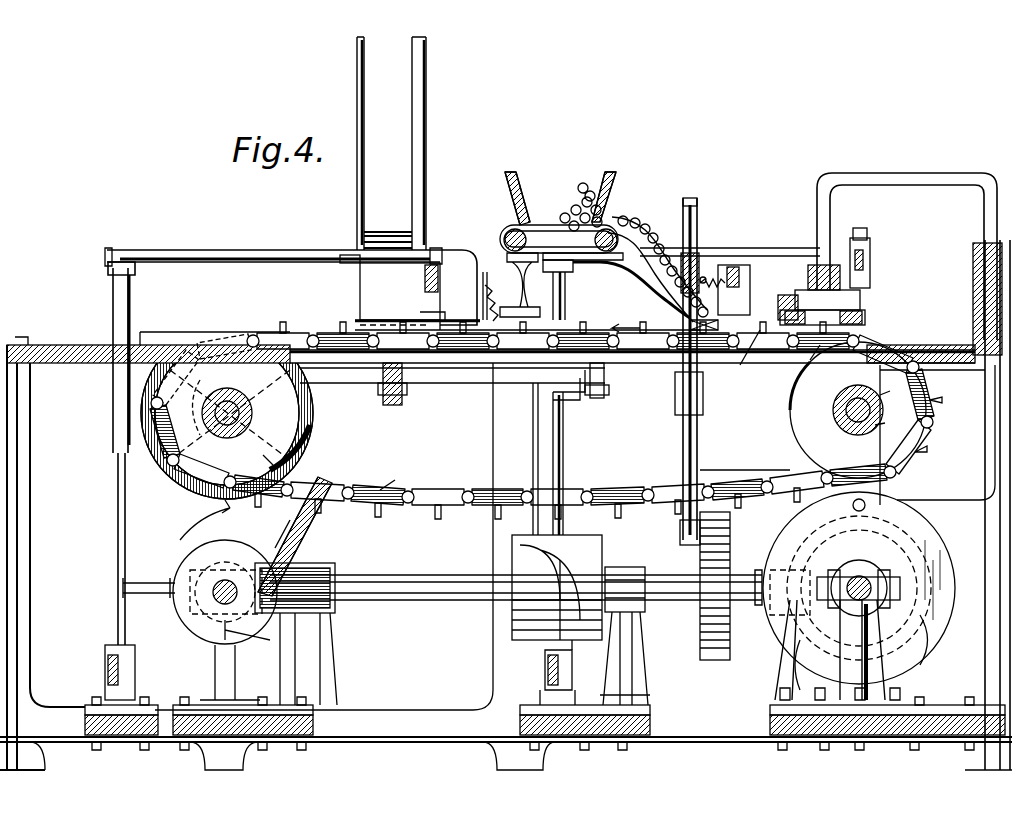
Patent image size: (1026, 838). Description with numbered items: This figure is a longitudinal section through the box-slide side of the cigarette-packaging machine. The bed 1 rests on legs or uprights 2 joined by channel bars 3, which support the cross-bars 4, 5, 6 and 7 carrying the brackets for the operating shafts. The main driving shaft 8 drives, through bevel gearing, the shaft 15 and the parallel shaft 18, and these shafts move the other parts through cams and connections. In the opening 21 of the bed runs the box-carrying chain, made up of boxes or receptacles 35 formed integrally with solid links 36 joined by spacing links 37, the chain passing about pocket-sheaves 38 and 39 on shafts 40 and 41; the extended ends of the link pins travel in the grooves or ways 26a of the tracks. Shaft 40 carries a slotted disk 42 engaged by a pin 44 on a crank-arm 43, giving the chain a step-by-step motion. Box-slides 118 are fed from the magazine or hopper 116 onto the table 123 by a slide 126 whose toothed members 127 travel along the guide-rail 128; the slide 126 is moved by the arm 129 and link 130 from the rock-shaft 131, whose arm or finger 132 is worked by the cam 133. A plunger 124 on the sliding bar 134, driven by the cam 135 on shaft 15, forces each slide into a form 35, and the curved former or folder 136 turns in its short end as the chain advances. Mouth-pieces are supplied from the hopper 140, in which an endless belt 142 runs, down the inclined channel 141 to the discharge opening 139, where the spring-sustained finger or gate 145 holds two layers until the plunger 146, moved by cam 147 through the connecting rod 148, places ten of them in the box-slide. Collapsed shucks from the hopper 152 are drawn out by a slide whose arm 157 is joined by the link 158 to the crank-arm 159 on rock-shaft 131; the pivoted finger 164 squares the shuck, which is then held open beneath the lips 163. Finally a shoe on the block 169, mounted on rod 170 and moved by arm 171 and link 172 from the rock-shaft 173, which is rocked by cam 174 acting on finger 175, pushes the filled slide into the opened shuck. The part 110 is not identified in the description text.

The bed 1 is at (68, 355).
The legs or uprights 2 is at (17, 660).
The channel pieces or bars 3 is at (345, 718).
The cross-bar 4 is at (118, 745).
The cross-bar 5 is at (283, 745).
The cross-bar 6 is at (650, 712).
The cross-bar 7 is at (800, 738).
The main driving shaft 8 is at (220, 605).
The shaft 15 is at (855, 577).
The shaft 18 is at (398, 610).
The opening 21 is at (300, 335).
The grooves or ways 26a is at (930, 345).
The boxes or receptacles 35 is at (340, 332).
The solid links 36 is at (398, 475).
The spacing links 37 is at (640, 360).
The pocket-sheave 38 is at (290, 430).
The pocket-sheave 39 is at (805, 430).
The shaft 40 is at (241, 413).
The shaft 41 is at (858, 436).
The slotted disk 42 is at (300, 450).
The crank-arm 43 is at (300, 548).
The pin 44 is at (345, 466).
The guide block 110 is at (737, 263).
The magazine or hopper 116 is at (760, 462).
The box-slides 118 is at (818, 360).
The table 123 is at (778, 303).
The plunger 124 is at (832, 270).
The slide 126 is at (862, 296).
The toothed members 127 is at (850, 322).
The guide-rail 128 is at (872, 262).
The arm 129 is at (770, 245).
The link 130 is at (870, 236).
The rock-shaft 131 is at (570, 270).
The arm or finger 132 is at (508, 570).
The cam 133 is at (585, 560).
The sliding bar 134 is at (905, 480).
The cam 135 is at (915, 555).
The curved former or folder 136 is at (748, 350).
The discharge opening 139 is at (655, 298).
The mouth-piece hopper 140 is at (588, 182).
The inclined way or channel 141 is at (672, 225).
The endless belt 142 is at (540, 215).
The spring-sustained finger or gate 145 is at (700, 300).
The plunger 146 is at (700, 230).
The cam 147 is at (700, 640).
The connecting rod 148 is at (683, 460).
The hopper 152 is at (391, 143).
The arm 157 is at (380, 372).
The link 158 is at (450, 385).
The crank-arm 159 is at (590, 392).
The lips 163 is at (435, 310).
The finger 164 is at (503, 270).
The block 169 is at (465, 270).
The rod 170 is at (420, 275).
The arm 171 is at (238, 258).
The link 172 is at (432, 238).
The rock-shaft 173 is at (115, 500).
The cam 174 is at (180, 610).
The finger 175 is at (150, 580).